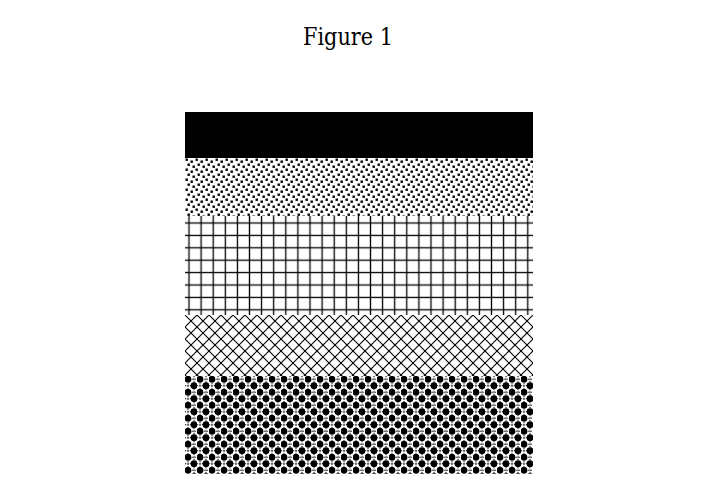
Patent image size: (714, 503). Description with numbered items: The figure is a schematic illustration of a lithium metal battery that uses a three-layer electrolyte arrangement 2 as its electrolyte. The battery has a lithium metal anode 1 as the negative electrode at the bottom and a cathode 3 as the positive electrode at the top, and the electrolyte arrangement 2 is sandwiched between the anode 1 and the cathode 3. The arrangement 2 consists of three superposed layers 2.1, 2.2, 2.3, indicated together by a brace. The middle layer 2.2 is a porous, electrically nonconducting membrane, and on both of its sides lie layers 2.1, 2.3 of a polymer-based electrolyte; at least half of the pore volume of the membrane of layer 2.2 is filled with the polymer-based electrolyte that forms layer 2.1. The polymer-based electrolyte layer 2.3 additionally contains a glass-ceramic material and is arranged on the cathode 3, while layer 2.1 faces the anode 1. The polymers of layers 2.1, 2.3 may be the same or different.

The lithium metal anode 1 is at (533, 427).
The three-layer electrolyte arrangement 2 is at (345, 267).
The polymer-based electrolyte layer 2.1 is at (533, 346).
The middle layer 2.2 is at (533, 269).
The glass-ceramic material-containing polymer-based electrolyte layer 2.3 is at (533, 188).
The cathode 3 is at (533, 134).